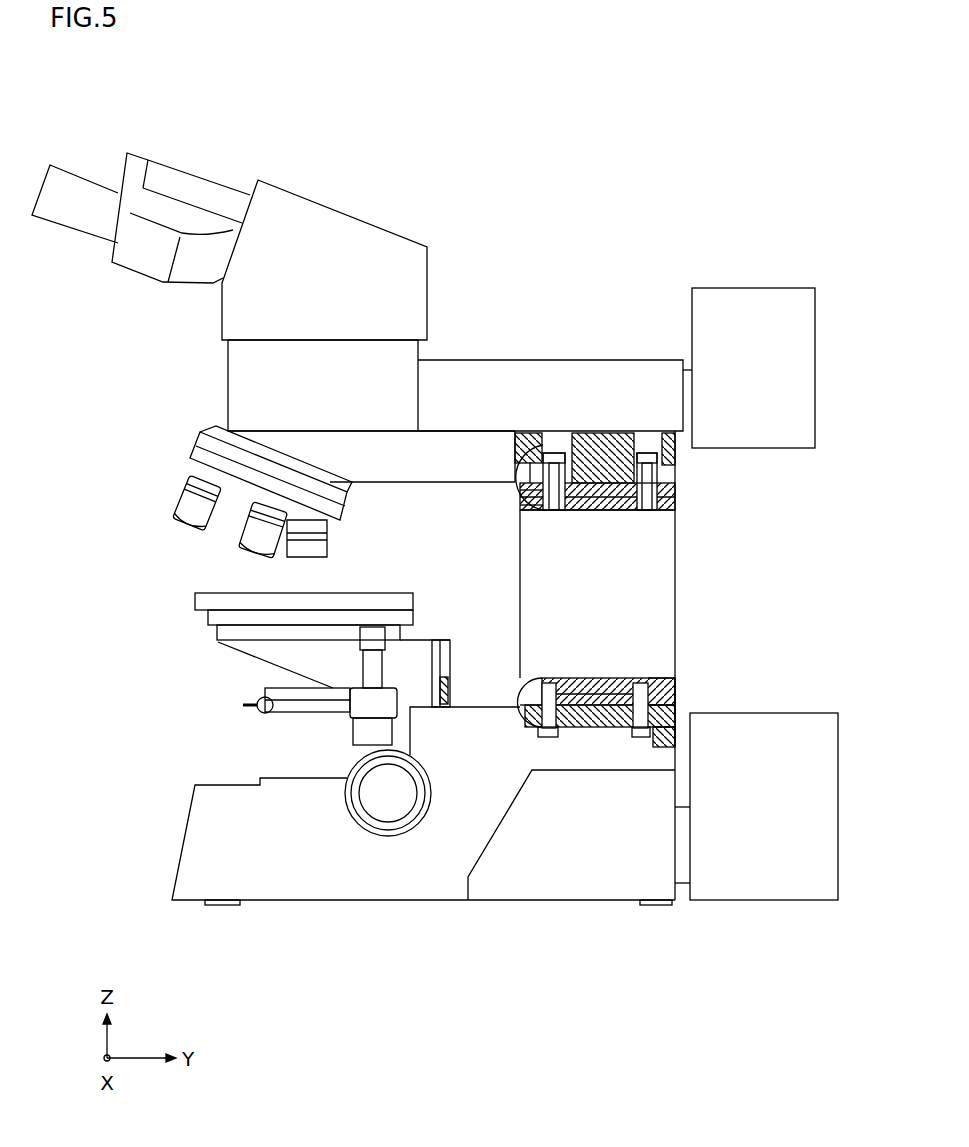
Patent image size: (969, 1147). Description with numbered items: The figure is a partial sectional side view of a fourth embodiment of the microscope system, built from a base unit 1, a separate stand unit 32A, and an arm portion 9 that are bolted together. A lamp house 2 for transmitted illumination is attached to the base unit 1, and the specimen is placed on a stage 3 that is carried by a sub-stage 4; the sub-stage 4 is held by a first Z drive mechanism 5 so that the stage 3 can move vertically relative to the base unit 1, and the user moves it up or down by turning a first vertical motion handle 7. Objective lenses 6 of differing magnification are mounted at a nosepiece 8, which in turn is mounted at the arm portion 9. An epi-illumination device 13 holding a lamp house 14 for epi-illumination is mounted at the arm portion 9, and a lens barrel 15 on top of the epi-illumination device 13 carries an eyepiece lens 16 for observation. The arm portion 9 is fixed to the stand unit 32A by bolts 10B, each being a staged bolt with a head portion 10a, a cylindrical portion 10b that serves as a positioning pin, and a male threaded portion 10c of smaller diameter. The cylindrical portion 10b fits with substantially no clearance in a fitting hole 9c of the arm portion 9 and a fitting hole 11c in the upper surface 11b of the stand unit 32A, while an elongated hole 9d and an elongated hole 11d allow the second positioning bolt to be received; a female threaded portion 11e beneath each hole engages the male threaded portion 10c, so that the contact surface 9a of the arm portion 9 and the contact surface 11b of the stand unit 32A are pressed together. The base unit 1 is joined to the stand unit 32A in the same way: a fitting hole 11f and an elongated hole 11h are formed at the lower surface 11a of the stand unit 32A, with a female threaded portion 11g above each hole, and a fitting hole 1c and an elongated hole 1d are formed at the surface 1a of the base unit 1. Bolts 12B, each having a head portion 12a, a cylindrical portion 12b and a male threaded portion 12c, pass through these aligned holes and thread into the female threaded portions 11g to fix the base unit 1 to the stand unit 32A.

The base unit 1 is at (268, 893).
The surface of the base unit 1a is at (595, 690).
The fitting hole 1c is at (528, 707).
The elongated hole 1d is at (635, 740).
The lamp house 2 is at (768, 905).
The stage 3 is at (195, 602).
The sub-stage 4 is at (217, 648).
The first Z drive mechanism 5 is at (455, 680).
The objective lens 6 is at (178, 508).
The first vertical motion handle 7 is at (385, 810).
The nosepiece 8 is at (186, 450).
The arm portion 9 is at (372, 478).
The contact surface of the arm portion 9a is at (615, 433).
The fitting hole 9c is at (578, 433).
The elongated hole 9d is at (678, 474).
The bolts 10B is at (450, 490).
The head portion 10a is at (520, 466).
The cylindrical portion 10b is at (525, 500).
The male threaded portion 10c is at (522, 532).
The surface of the stand unit 11a is at (585, 737).
The upper surface of the stand unit 11b is at (600, 513).
The fitting hole 11c is at (572, 515).
The elongated hole 11d is at (655, 500).
The female threaded portion 11e is at (560, 515).
The fitting hole 11f is at (530, 690).
The female threaded portion 11g is at (548, 668).
The elongated hole 11h is at (637, 688).
The bolts 12B is at (800, 612).
The head portion 12a is at (705, 728).
The cylindrical portion 12b is at (672, 700).
The male threaded portion 12c is at (675, 672).
The epi-illumination device 13 is at (464, 360).
The lamp house 14 is at (737, 290).
The lens barrel 15 is at (314, 196).
The eyepiece lens 16 is at (64, 167).
The stand unit 32A is at (677, 577).